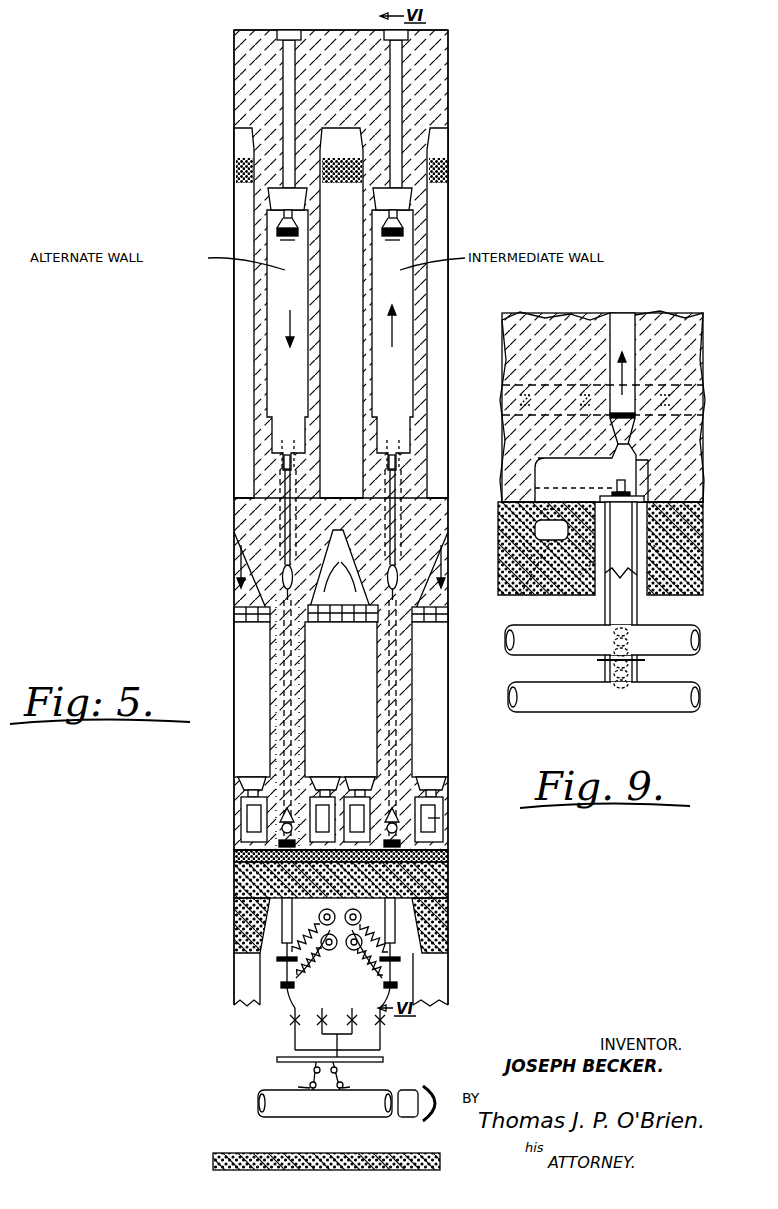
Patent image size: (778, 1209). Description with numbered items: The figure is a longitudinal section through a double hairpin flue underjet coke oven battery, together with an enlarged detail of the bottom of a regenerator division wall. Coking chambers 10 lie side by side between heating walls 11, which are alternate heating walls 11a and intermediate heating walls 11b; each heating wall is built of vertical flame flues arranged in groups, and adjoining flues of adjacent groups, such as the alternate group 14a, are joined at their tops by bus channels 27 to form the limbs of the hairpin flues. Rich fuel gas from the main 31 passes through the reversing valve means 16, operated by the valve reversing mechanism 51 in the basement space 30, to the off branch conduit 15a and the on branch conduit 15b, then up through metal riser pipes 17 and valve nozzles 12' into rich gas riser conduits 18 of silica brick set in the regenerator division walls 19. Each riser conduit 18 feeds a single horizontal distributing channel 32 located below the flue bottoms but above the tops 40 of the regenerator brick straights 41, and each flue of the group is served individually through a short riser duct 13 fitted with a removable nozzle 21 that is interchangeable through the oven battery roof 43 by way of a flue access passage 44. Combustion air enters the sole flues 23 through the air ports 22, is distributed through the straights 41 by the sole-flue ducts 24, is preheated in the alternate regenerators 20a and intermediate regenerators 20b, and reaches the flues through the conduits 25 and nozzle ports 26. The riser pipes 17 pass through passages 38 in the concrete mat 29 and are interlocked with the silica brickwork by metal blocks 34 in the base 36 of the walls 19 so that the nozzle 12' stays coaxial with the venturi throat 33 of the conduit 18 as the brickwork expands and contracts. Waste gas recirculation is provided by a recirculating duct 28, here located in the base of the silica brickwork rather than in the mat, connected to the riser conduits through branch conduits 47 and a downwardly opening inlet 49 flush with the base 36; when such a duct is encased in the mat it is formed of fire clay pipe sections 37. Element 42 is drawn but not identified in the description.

In FIG. 5, the coking chamber 10 is at (240, 207).
In FIG. 5, the oven battery roof 43 is at (256, 46).
In FIG. 5, the flue access passage 44 is at (288, 78).
In FIG. 5, the horizontal bus channel 27 is at (406, 198).
In FIG. 5, the alternate flame flue group 14a is at (342, 309).
In FIG. 5, the heating wall 11 is at (367, 294).
In FIG. 5, the alternate heating wall 11a is at (305, 420).
In FIG. 5, the intermediate heating wall 11b is at (379, 420).
In FIG. 5, the removable port-determining nozzle 21 is at (287, 453).
In FIG. 5, the nozzle port 26 is at (280, 481).
In FIG. 5, the horizontal distributing channel 32 is at (283, 580).
In FIG. 5, the silica brick riser duct 13 is at (282, 500).
In FIG. 5, the regenerator conduit 25 is at (236, 557).
In FIG. 9, the regenerator conduit 25 is at (455, 557).
In FIG. 5, the regenerator brick top 40 is at (240, 609).
In FIG. 5, the silica brick straight 41 is at (245, 618).
In FIG. 5, the alternate regenerator 20a is at (341, 699).
In FIG. 5, the intermediate regenerator 20b is at (342, 699).
In FIG. 5, the rich gas riser conduit 18 is at (292, 700).
In FIG. 9, the rich gas riser conduit 18 is at (630, 318).
In FIG. 5, the silica brick regenerator division wall 19 is at (377, 708).
In FIG. 9, the silica brick regenerator division wall 19 is at (522, 363).
In FIG. 5, the sole-flue duct 24 is at (250, 783).
In FIG. 9, the sole-flue duct 24 is at (522, 400).
In FIG. 5, the regenerator sole flue air port 22 is at (250, 806).
In FIG. 5, the regenerator sole flue 23 is at (250, 815).
In FIG. 9, the regenerator sole flue 23 is at (665, 440).
In FIG. 5, the venturi throat 33 is at (444, 806).
In FIG. 9, the venturi throat 33 is at (662, 460).
In FIG. 5, the recirculating duct 28 is at (280, 829).
In FIG. 9, the recirculating duct 28 is at (535, 530).
In FIG. 5, the valve nozzle 12' is at (310, 850).
In FIG. 9, the valve nozzle 12' is at (688, 481).
In FIG. 5, the concrete mat 29 is at (262, 879).
In FIG. 5, the metal riser pipe 17 is at (283, 918).
In FIG. 9, the metal riser pipe 17 is at (608, 614).
In FIG. 5, the off alternate branch conduit 15a is at (350, 950).
In FIG. 9, the off alternate branch conduit 15a is at (648, 690).
In FIG. 5, the on intermediate branch conduit 15b is at (413, 1027).
In FIG. 9, the on intermediate branch conduit 15b is at (648, 630).
In FIG. 5, the valve reversing mechanism 51 is at (384, 1060).
In FIG. 5, the basement space 30 is at (245, 1072).
In FIG. 5, the reversing valve means 16 is at (346, 1103).
In FIG. 5, the fuel gas main 31 is at (283, 1105).
In FIG. 9, the branch conduit 47 is at (560, 456).
In FIG. 9, the downwardly opening inlet 49 is at (540, 481).
In FIG. 9, the metal block 34 is at (640, 490).
In FIG. 9, the silica wall base 36 is at (650, 503).
In FIG. 9, the wall block 42 is at (690, 522).
In FIG. 9, the fire clay pipe section 37 is at (505, 596).
In FIG. 9, the through passage 38 is at (555, 596).